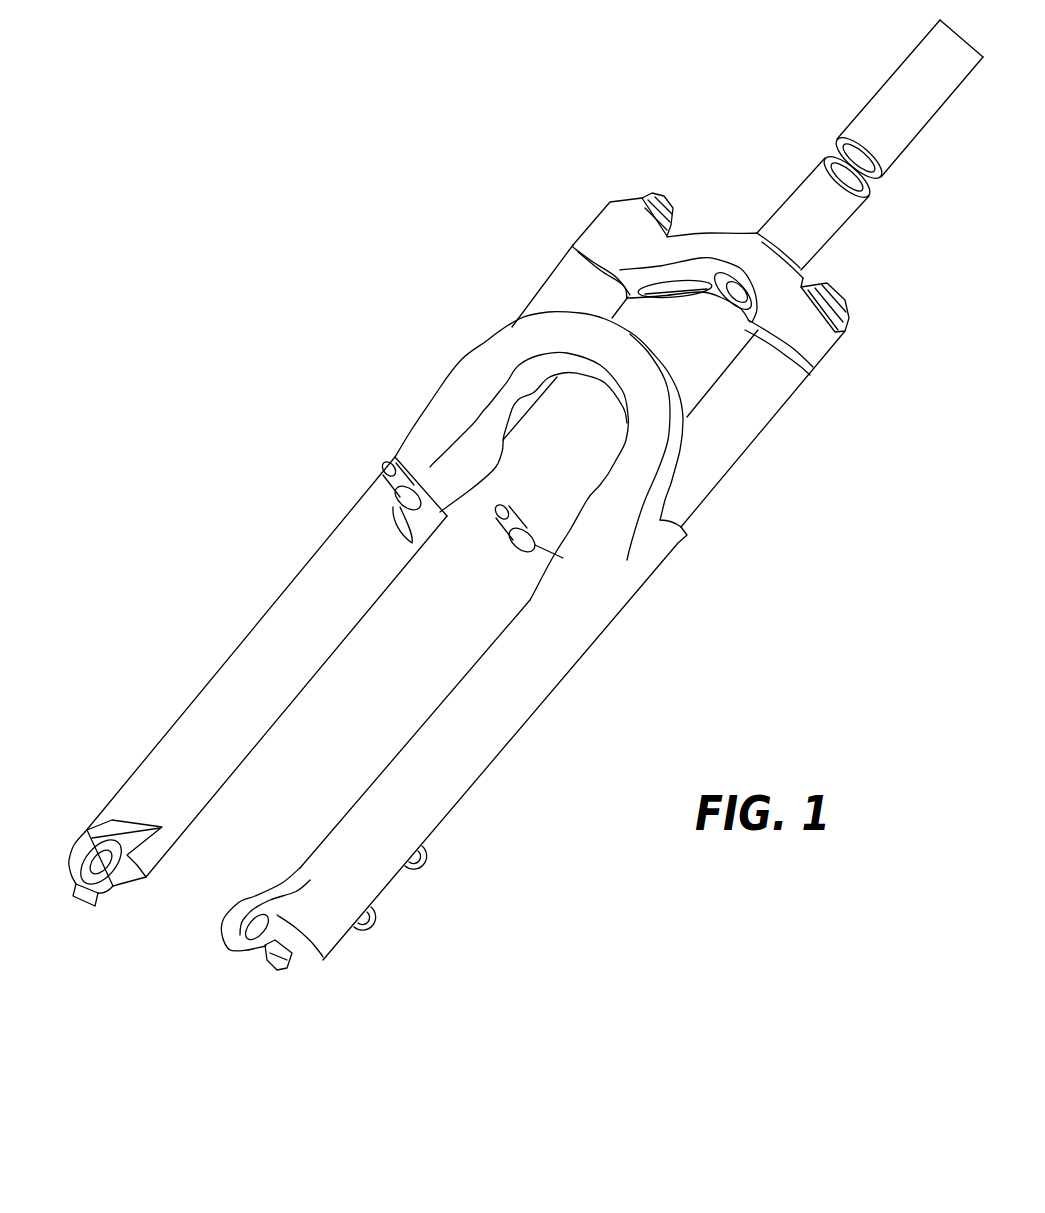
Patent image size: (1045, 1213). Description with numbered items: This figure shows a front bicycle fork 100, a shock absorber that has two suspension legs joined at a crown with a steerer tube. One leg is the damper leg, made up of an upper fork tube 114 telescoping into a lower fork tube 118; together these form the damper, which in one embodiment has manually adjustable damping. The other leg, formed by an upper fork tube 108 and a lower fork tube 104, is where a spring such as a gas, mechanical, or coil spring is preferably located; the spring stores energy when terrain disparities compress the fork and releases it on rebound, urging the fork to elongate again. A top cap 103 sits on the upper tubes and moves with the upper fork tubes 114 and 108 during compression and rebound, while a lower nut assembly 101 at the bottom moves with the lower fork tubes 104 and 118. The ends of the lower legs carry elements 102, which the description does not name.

The front fork 100 is at (756, 82).
The lower nut assembly 101 is at (274, 967).
The dropout 102 is at (112, 890).
The top cap 103 is at (845, 302).
The lower fork tube 104 is at (185, 710).
The upper fork tube 108 is at (546, 285).
The upper fork tube 114 is at (788, 408).
The lower fork tube 118 is at (531, 718).